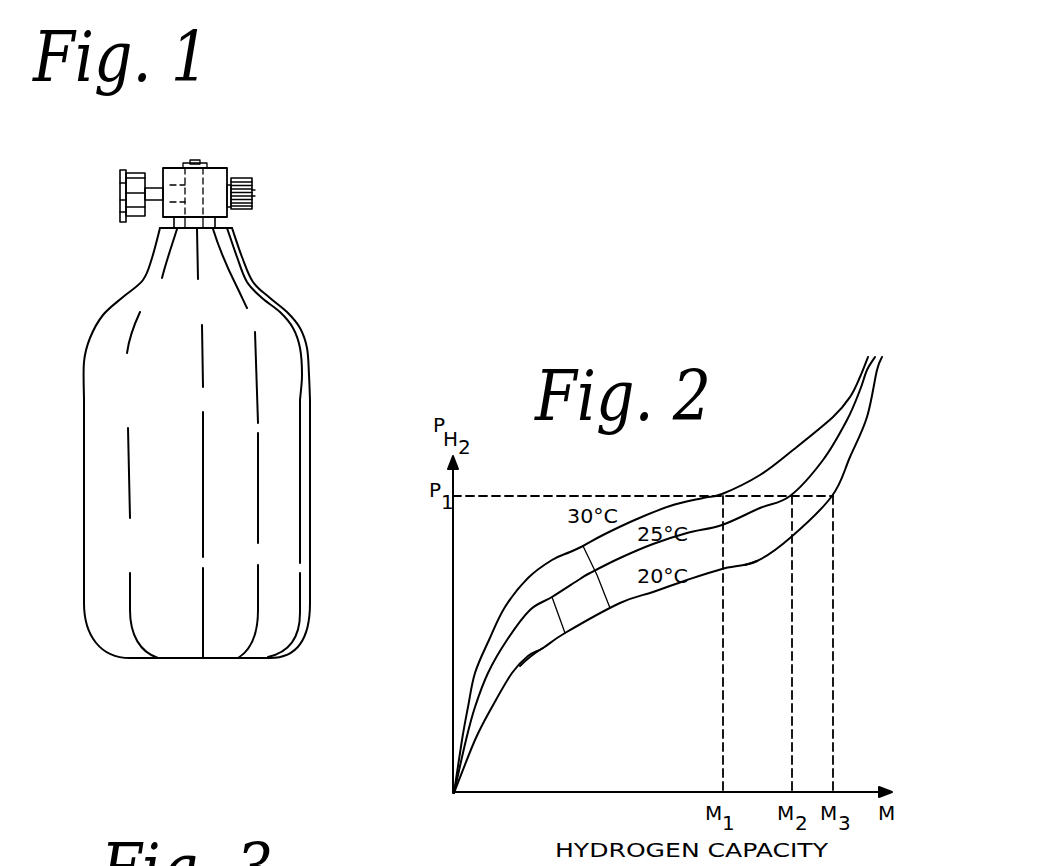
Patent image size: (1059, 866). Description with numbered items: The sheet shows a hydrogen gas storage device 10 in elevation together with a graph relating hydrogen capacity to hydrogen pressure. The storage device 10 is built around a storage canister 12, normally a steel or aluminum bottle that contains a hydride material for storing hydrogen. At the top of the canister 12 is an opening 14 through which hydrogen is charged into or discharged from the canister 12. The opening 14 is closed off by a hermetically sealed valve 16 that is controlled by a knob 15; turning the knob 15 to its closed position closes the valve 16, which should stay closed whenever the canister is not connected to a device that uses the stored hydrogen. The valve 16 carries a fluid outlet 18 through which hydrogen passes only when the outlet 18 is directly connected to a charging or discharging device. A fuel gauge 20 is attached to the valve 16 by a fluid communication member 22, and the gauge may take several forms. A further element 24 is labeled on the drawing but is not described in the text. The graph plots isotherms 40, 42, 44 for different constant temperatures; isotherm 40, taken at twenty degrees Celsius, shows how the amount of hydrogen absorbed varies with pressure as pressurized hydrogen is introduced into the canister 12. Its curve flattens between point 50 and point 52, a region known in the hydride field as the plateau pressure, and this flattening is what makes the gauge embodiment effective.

In FIG. 1, the hydrogen gas storage device 10 is at (348, 317).
In FIG. 1, the storage canister 12 is at (311, 452).
In FIG. 1, the opening 14 is at (216, 222).
In FIG. 1, the knob 15 is at (253, 193).
In FIG. 1, the hermetically sealed valve 16 is at (228, 169).
In FIG. 1, the fluid outlet 18 is at (196, 160).
In FIG. 1, the fuel gauge 20 is at (137, 170).
In FIG. 1, the fluid communication member 22 is at (153, 185).
In FIG. 1, the valve body 24 is at (137, 222).
In FIG. 2, the isotherm 40 is at (667, 587).
In FIG. 2, the isotherm 42 is at (565, 633).
In FIG. 2, the isotherm 44 is at (610, 608).
In FIG. 2, the point 50 is at (543, 649).
In FIG. 2, the point 52 is at (757, 562).